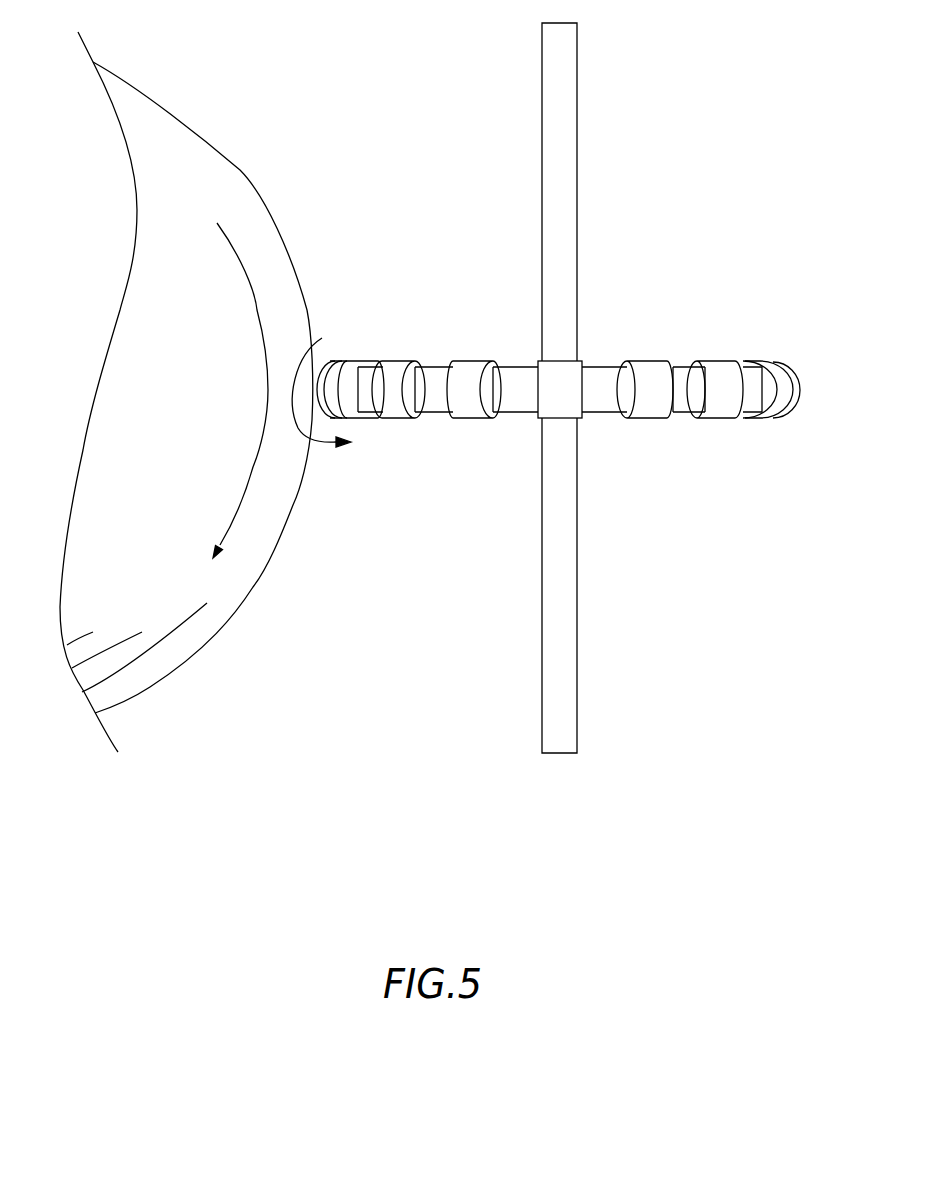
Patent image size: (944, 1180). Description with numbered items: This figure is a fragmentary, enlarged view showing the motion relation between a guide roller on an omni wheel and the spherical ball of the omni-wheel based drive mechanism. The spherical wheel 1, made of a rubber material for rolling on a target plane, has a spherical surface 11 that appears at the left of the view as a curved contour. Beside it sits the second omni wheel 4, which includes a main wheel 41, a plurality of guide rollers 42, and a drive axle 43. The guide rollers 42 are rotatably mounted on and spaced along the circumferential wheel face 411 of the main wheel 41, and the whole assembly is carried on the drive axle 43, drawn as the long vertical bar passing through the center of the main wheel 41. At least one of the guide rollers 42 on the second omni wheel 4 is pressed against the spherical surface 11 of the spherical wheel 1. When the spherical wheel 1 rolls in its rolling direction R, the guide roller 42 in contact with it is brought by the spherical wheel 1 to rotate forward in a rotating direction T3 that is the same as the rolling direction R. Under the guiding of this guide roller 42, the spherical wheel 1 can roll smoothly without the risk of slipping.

The spherical wheel 1 is at (232, 573).
The spherical surface 11 is at (285, 527).
The second omni wheel 4 is at (558, 388).
The main wheel 41 is at (433, 383).
The circumferential wheel face 411 is at (508, 383).
The guide rollers 42 is at (318, 387).
The drive axle 43 is at (557, 95).
The rolling direction R is at (263, 388).
The rotating direction T3 is at (318, 442).